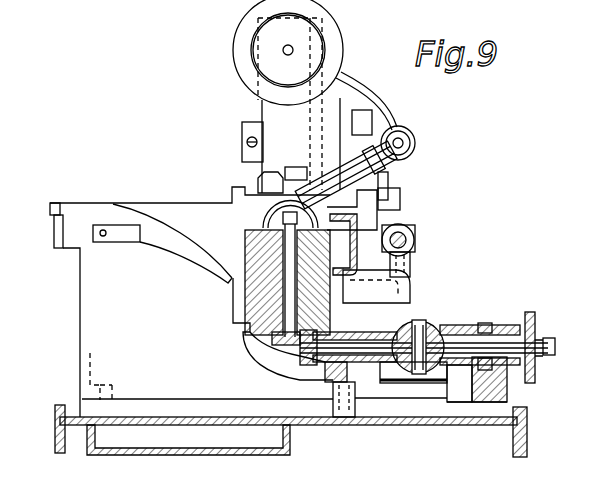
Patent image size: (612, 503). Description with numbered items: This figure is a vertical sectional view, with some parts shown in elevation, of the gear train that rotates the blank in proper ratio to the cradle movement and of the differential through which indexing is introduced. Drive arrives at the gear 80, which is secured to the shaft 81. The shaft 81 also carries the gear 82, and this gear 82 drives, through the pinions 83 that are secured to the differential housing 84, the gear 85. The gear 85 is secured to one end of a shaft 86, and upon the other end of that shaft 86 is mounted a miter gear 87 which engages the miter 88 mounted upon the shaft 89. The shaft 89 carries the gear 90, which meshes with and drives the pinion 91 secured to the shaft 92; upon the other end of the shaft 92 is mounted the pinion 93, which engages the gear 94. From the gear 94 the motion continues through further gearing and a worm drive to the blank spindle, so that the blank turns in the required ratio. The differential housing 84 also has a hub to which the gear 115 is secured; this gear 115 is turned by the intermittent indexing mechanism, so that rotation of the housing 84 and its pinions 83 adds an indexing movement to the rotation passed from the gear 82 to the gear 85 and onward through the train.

The gear 80 is at (537, 318).
The shaft 81 is at (494, 344).
The gear 82 is at (435, 329).
The pinions 83 is at (420, 324).
The differential housing 84 is at (468, 332).
The gear 115 is at (484, 333).
The gear 85 is at (375, 336).
The shaft 86 is at (333, 342).
The miter gear 87 is at (330, 378).
The miter 88 is at (286, 305).
The shaft 89 is at (262, 330).
The gear 90 is at (265, 219).
The pinion 91 is at (287, 193).
The shaft 92 is at (388, 168).
The pinion 93 is at (392, 158).
The gear 94 is at (415, 140).